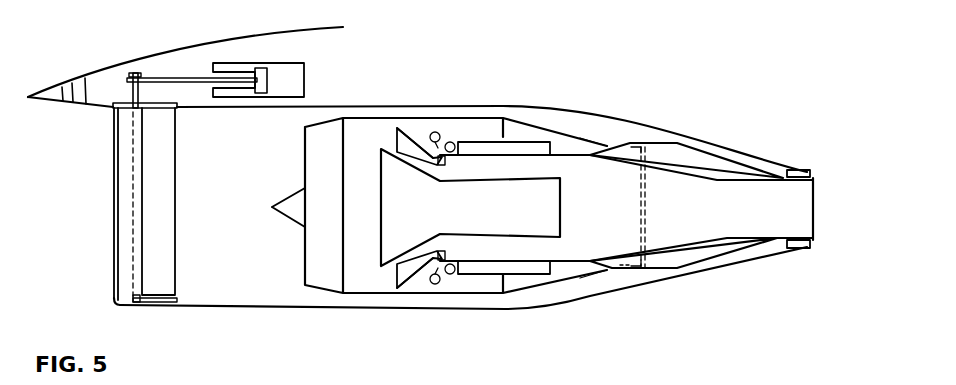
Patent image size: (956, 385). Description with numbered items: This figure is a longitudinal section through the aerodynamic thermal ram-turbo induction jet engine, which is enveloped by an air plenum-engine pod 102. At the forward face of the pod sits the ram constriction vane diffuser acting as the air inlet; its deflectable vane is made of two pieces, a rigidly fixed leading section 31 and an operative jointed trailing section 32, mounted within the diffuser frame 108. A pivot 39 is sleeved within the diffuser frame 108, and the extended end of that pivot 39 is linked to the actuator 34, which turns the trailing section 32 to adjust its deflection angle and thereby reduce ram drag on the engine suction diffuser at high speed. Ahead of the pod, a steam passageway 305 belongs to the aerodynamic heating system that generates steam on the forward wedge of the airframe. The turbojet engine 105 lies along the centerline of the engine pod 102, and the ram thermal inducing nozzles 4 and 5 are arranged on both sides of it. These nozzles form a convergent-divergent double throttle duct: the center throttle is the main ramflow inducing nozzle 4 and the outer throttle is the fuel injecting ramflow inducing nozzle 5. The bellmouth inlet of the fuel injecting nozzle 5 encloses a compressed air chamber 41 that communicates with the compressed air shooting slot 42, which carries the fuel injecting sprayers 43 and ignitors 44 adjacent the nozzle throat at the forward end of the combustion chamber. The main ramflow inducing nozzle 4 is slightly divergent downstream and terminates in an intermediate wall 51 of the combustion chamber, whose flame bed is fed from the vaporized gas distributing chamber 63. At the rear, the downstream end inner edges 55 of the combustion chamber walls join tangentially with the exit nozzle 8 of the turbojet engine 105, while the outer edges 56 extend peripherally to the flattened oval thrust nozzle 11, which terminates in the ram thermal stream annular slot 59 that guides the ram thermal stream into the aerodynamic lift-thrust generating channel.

The main ramflow inducing nozzle 4 is at (392, 225).
The fuel injecting ramflow inducing nozzle 5 is at (397, 137).
The exit nozzle 8 is at (630, 144).
The oval thrust nozzle 11 is at (818, 207).
The leading section 31 is at (113, 182).
The trailing section 32 is at (167, 183).
The actuator 34 is at (297, 60).
The pivot 39 is at (143, 88).
The compressed air chamber 41 is at (420, 138).
The compressed air shooting slot 42 is at (447, 166).
The fuel injecting sprayer 43 is at (435, 132).
The ignitor 44 is at (452, 140).
The intermediate wall 51 is at (563, 205).
The downstream end inner edges 55 is at (615, 143).
The outer edges 56 is at (784, 170).
The ram thermal stream annular slot 59 is at (815, 173).
The vaporized gas distributing chamber 63 is at (520, 140).
The air plenum-engine pod 102 is at (277, 310).
The turbojet engine 105 is at (318, 207).
The diffuser frame 108 is at (122, 100).
The steam passageway 305 is at (70, 90).